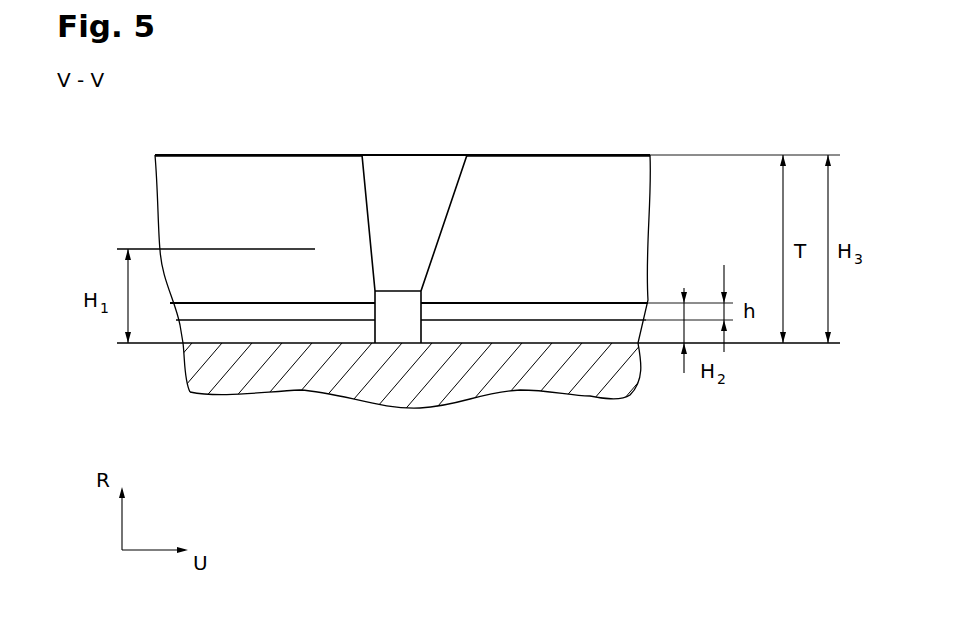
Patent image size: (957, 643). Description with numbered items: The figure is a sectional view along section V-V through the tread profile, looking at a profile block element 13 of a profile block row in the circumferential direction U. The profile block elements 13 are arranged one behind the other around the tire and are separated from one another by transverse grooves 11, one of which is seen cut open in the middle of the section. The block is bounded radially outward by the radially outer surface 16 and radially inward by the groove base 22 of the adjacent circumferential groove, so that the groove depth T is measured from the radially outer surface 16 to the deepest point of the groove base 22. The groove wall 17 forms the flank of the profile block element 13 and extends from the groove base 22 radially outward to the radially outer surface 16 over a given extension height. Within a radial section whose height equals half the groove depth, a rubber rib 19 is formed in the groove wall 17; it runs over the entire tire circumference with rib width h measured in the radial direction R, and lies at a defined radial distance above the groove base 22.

The transverse groove 11 is at (400, 193).
The profile block element 13 is at (253, 155).
The radially outer surface 16 is at (558, 153).
The groove wall 17 is at (592, 187).
The rubber rib 19 is at (328, 308).
The groove base 22 is at (548, 332).